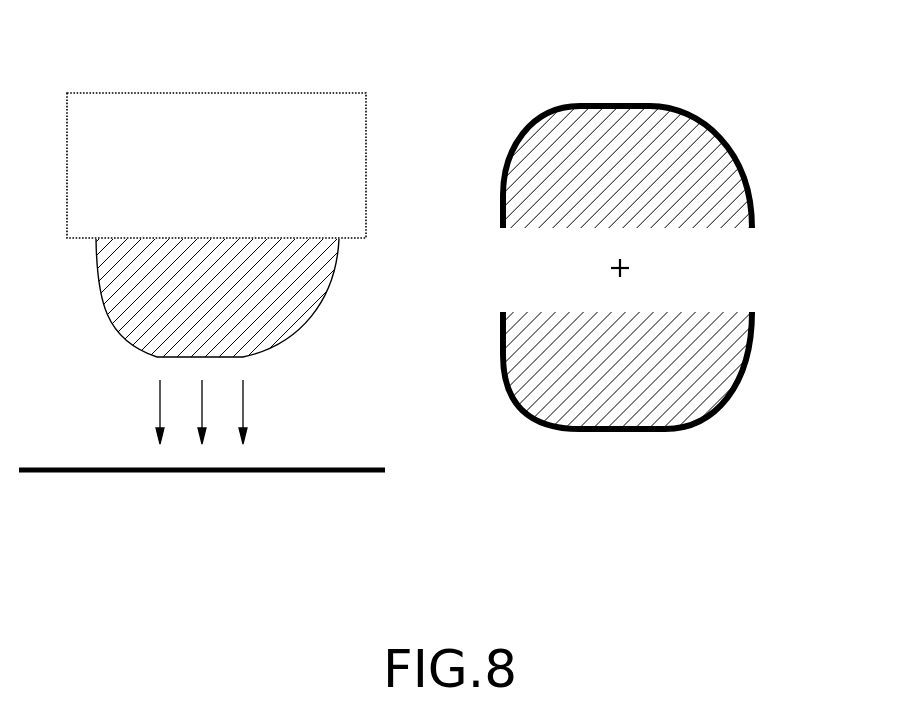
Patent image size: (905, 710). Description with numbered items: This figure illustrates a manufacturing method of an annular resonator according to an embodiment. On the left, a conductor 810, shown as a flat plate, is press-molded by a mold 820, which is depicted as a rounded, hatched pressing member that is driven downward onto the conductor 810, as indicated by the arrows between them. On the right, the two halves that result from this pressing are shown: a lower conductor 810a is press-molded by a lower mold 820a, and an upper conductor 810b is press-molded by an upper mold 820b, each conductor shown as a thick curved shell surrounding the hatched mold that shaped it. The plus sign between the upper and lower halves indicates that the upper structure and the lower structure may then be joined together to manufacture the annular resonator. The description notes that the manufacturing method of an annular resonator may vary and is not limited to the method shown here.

The conductor 810 is at (300, 473).
The mold 820 is at (287, 325).
The lower conductor 810a is at (723, 400).
The upper conductor 810b is at (723, 138).
The lower mold 820a is at (720, 357).
The upper mold 820b is at (720, 180).